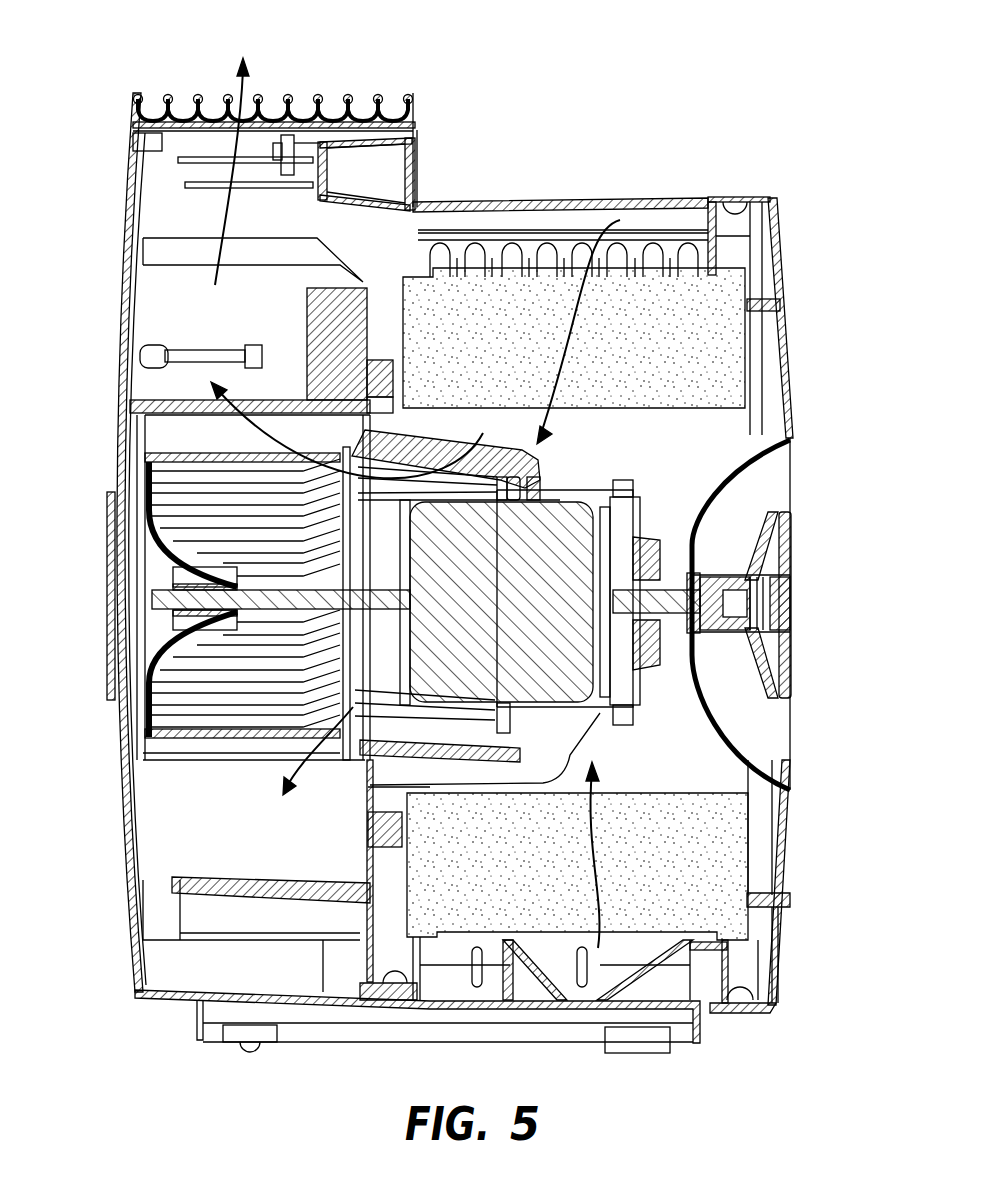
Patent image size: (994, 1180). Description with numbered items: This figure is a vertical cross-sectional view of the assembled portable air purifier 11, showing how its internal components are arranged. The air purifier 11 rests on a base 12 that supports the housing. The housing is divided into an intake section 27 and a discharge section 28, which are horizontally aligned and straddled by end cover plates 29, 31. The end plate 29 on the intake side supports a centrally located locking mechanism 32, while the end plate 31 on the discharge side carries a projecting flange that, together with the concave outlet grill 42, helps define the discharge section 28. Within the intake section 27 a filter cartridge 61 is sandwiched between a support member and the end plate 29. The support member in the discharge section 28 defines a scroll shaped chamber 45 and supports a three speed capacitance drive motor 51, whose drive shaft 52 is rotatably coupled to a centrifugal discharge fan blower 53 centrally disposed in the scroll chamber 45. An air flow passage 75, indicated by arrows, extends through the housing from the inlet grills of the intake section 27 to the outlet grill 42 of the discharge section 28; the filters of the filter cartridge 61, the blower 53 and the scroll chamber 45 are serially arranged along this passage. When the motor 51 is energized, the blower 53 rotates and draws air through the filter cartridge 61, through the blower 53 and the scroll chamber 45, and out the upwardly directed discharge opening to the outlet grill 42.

The portable air purifier 11 is at (782, 150).
The base 12 is at (680, 1045).
The intake section 27 is at (622, 140).
The discharge section 28 is at (281, 60).
The end cover plate 29 is at (790, 400).
The end cover plate 31 is at (118, 333).
The locking mechanism 32 is at (797, 578).
The outlet grill 42 is at (348, 93).
The scroll shaped chamber 45 is at (122, 790).
The drive motor 51 is at (562, 530).
The drive shaft 52 is at (162, 590).
The centrifugal discharge fan blower 53 is at (243, 745).
The filter cartridge 61 is at (513, 225).
The air flow passage 75 is at (278, 229).